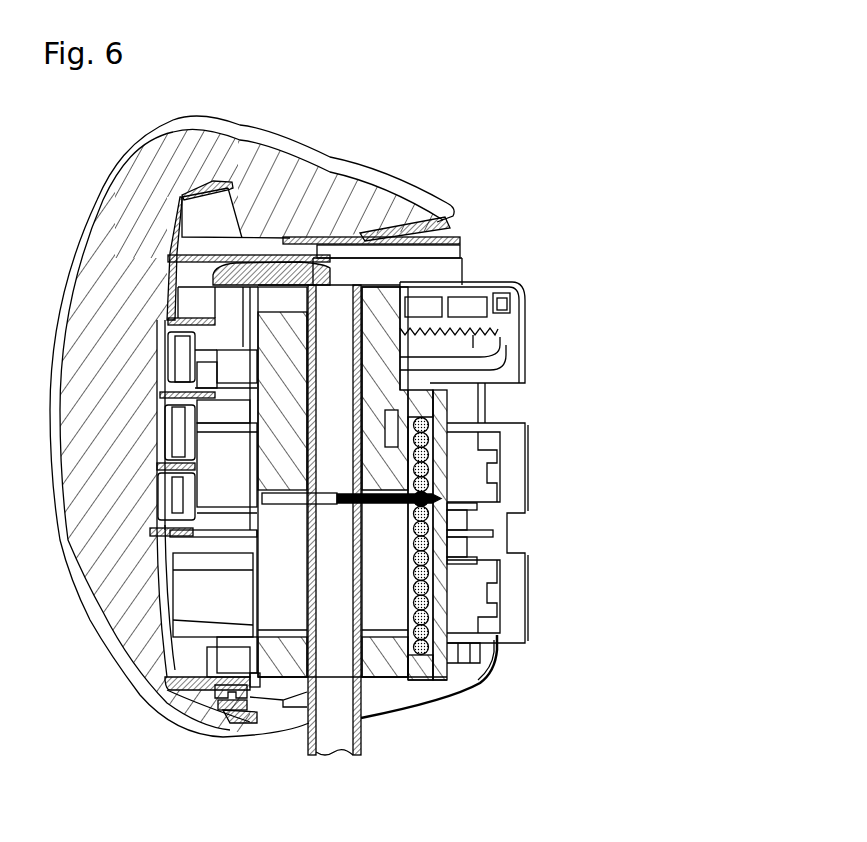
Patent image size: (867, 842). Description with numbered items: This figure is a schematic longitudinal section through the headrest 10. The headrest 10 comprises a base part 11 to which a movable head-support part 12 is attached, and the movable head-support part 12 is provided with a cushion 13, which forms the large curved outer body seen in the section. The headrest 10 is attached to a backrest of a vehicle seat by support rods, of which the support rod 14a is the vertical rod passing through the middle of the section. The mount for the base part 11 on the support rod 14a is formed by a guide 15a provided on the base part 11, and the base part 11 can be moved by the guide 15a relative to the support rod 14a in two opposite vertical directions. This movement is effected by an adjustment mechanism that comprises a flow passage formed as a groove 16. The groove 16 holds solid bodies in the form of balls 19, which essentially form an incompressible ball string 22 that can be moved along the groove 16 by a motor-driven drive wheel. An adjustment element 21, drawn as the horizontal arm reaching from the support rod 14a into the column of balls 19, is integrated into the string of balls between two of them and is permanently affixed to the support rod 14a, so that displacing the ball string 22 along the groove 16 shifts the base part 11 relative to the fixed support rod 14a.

The headrest 10 is at (470, 95).
The base part 11 is at (388, 357).
The movable head-support part 12 is at (160, 292).
The cushion 13 is at (122, 266).
The support rod 14a is at (335, 698).
The guide 15a is at (363, 318).
The groove 16 is at (408, 553).
The balls 19 is at (430, 422).
The adjustment element 21 is at (315, 500).
The ball string 22 is at (412, 588).